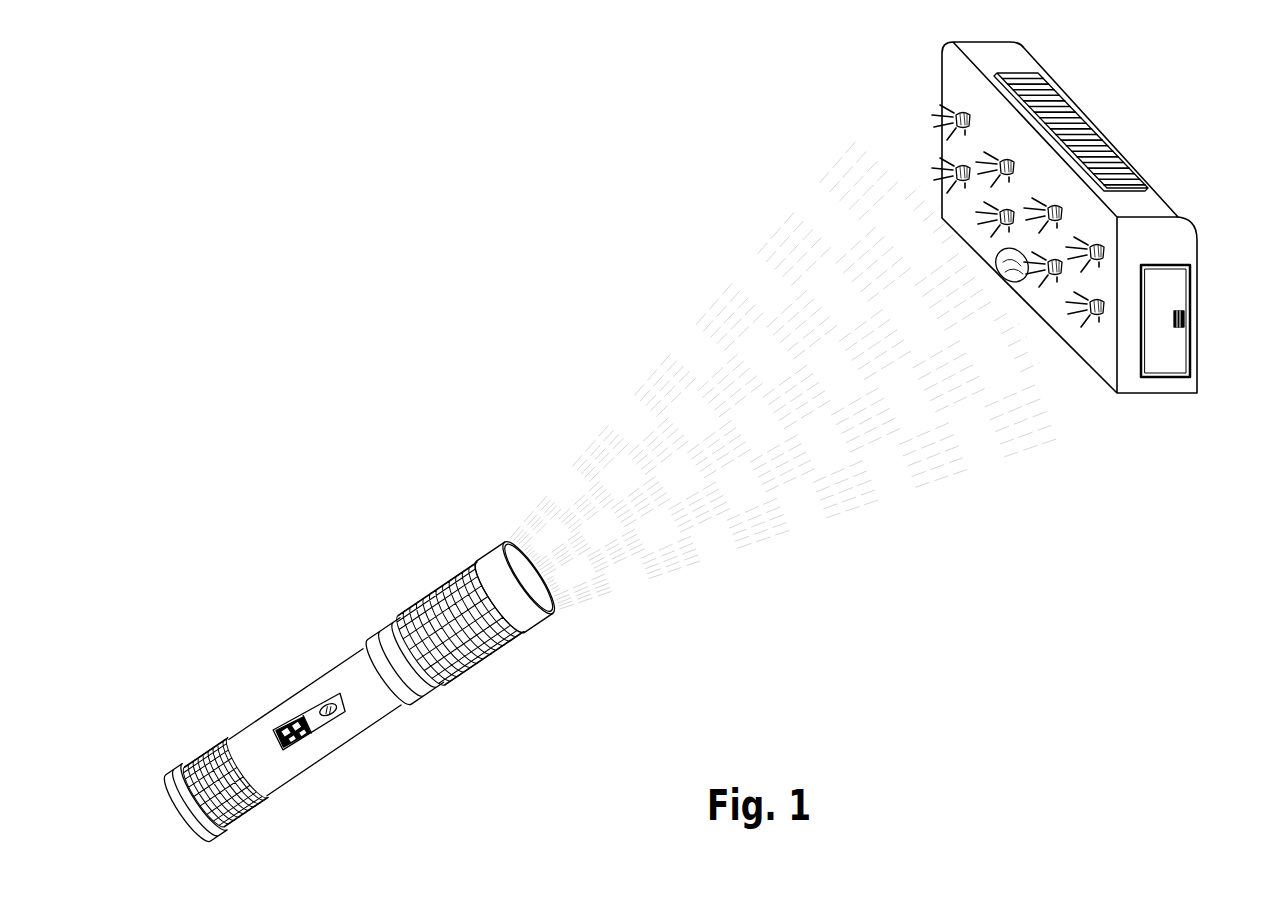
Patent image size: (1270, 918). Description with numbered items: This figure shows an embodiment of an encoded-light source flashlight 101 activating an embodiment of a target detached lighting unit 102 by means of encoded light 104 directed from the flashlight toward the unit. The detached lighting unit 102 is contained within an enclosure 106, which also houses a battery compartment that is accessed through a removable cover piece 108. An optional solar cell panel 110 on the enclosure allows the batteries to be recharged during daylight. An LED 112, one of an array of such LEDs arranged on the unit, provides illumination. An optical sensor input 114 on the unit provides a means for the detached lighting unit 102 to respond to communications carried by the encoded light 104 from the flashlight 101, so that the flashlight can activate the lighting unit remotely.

The encoded-light source flashlight 101 is at (343, 630).
The target detached lighting unit 102 is at (1038, 217).
The encoded light 104 is at (702, 333).
The enclosure 106 is at (1167, 193).
The removable cover piece 108 is at (1187, 295).
The solar cell panel 110 is at (1025, 70).
The LED 112 is at (962, 111).
The optical sensor input 114 is at (1018, 283).